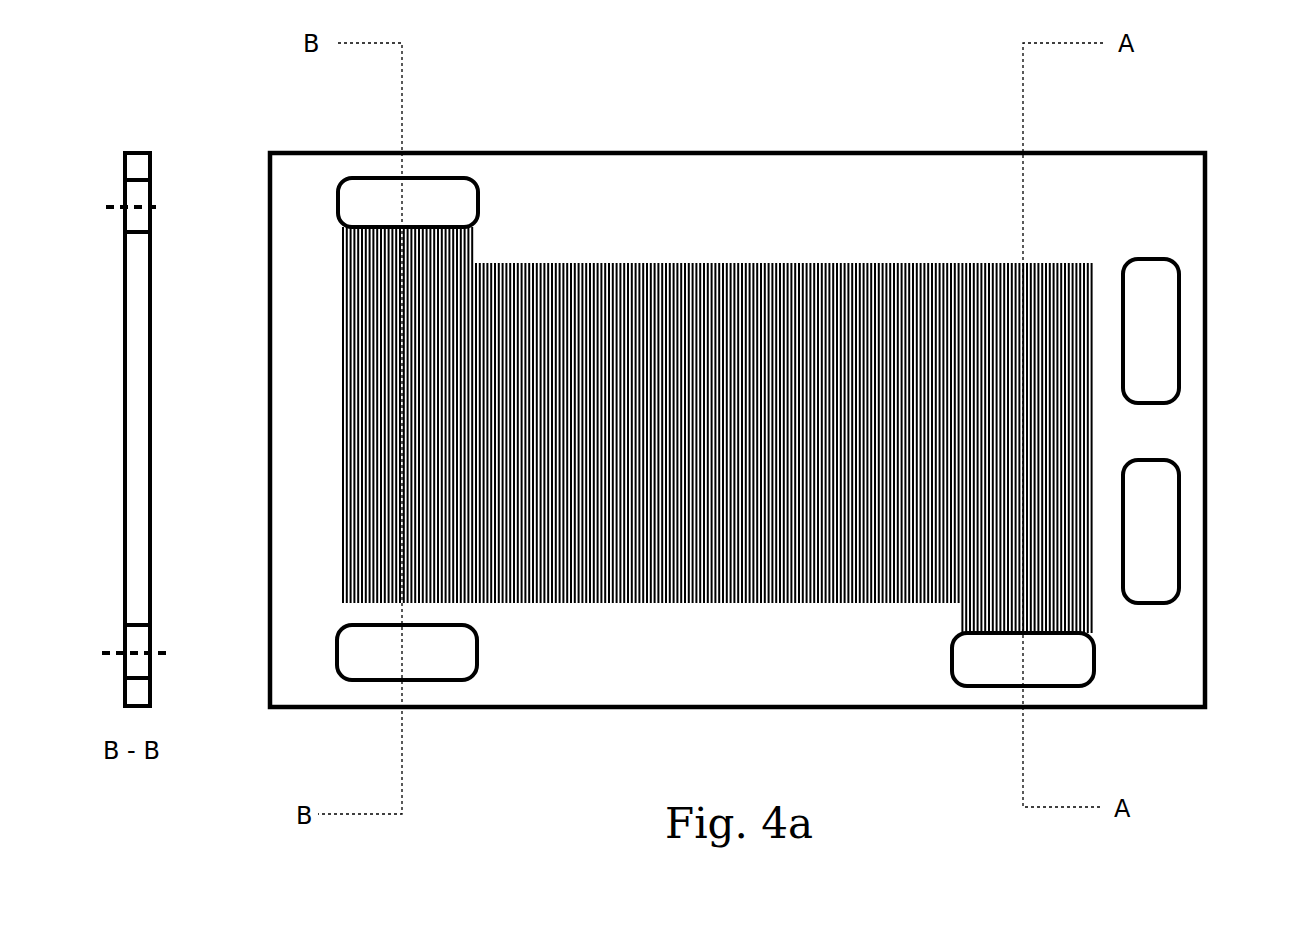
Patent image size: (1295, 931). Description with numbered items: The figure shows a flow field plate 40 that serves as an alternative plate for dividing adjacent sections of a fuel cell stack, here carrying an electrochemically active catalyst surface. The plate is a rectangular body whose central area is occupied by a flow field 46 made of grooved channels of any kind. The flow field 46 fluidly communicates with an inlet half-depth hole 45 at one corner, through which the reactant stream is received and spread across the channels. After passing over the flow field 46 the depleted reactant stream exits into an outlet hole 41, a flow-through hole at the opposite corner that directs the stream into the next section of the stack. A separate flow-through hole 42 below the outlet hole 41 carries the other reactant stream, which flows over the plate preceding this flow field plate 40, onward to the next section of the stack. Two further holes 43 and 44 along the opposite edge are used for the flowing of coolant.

The flow field plate 40 is at (737, 378).
The outlet hole 41 is at (324, 166).
The flow-through hole 42 is at (314, 687).
The coolant hole 43 is at (1202, 302).
The coolant hole 44 is at (1202, 529).
The inlet half-depth hole 45 is at (1084, 694).
The flow field 46 is at (718, 457).